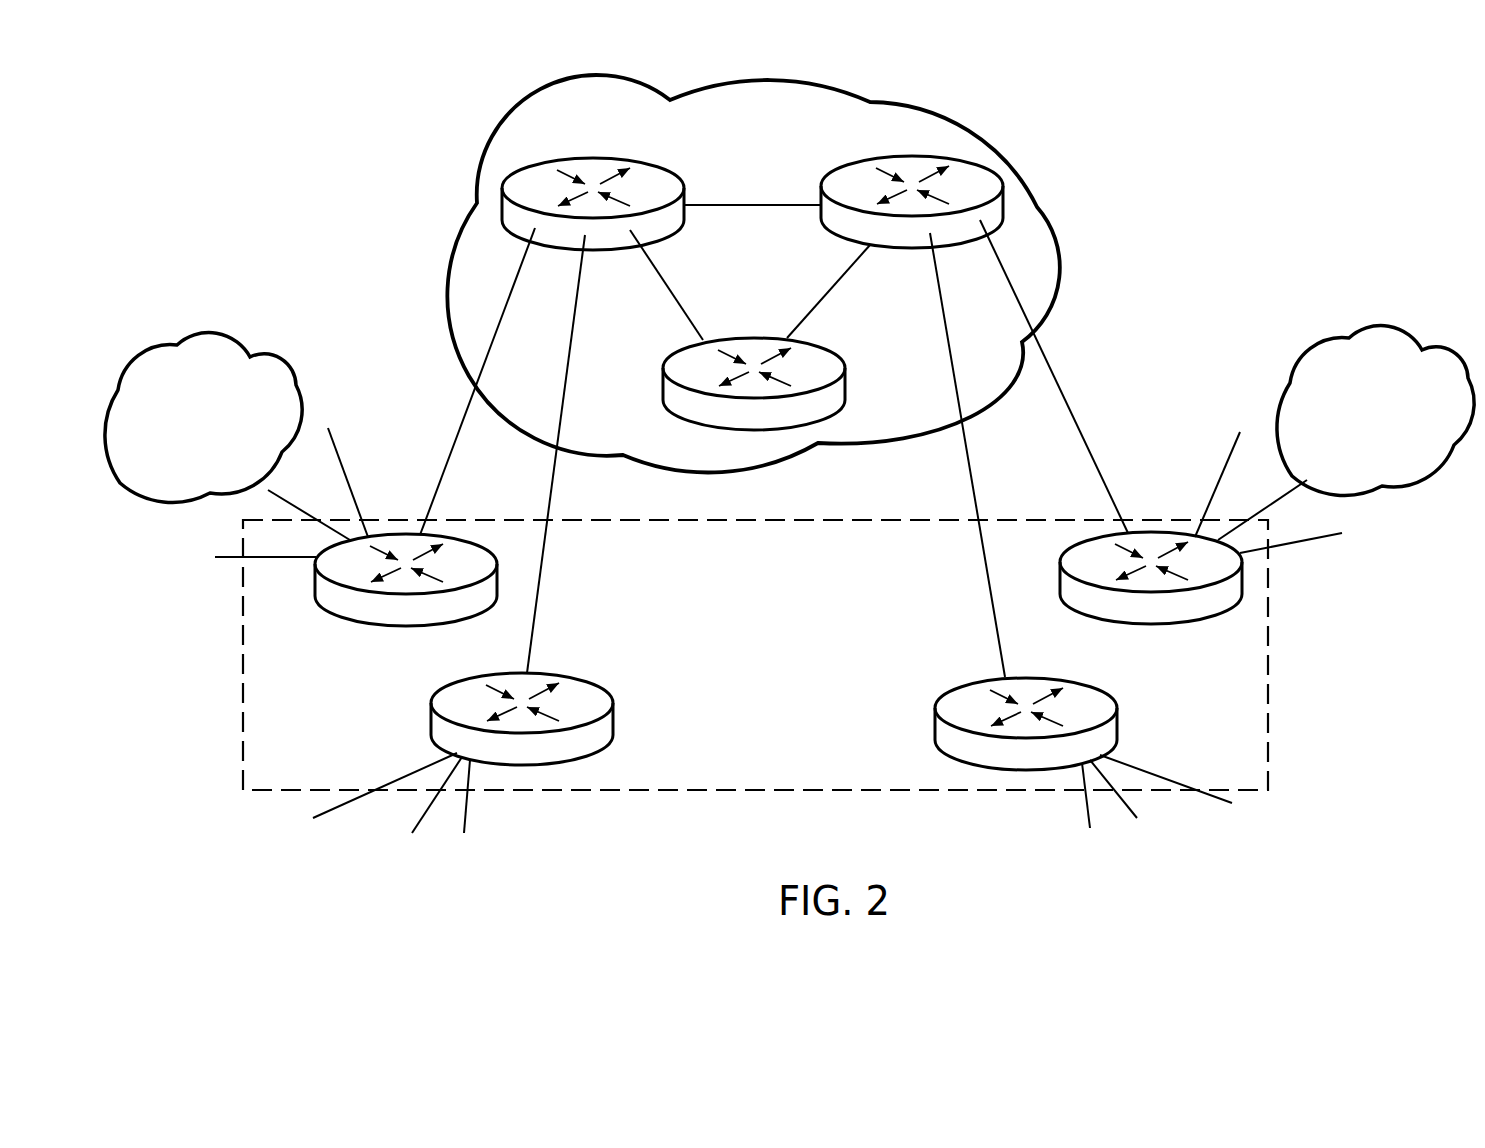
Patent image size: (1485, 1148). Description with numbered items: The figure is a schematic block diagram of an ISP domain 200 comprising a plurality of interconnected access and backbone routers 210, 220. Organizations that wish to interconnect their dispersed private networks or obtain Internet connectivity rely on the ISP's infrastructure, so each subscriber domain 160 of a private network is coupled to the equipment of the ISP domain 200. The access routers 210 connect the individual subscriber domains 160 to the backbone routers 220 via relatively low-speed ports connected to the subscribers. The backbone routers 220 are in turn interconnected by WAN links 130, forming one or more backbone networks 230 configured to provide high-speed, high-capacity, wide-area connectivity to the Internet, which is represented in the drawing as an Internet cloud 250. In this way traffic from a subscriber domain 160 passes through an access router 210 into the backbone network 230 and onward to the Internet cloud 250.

The WAN link 130 is at (747, 204).
The subscriber domain 160 is at (789, 433).
The ISP domain 200 is at (755, 655).
The access router 210 is at (452, 625).
The backbone router 220 is at (613, 157).
The backbone network 230 is at (757, 285).
The Internet cloud 250 is at (753, 273).